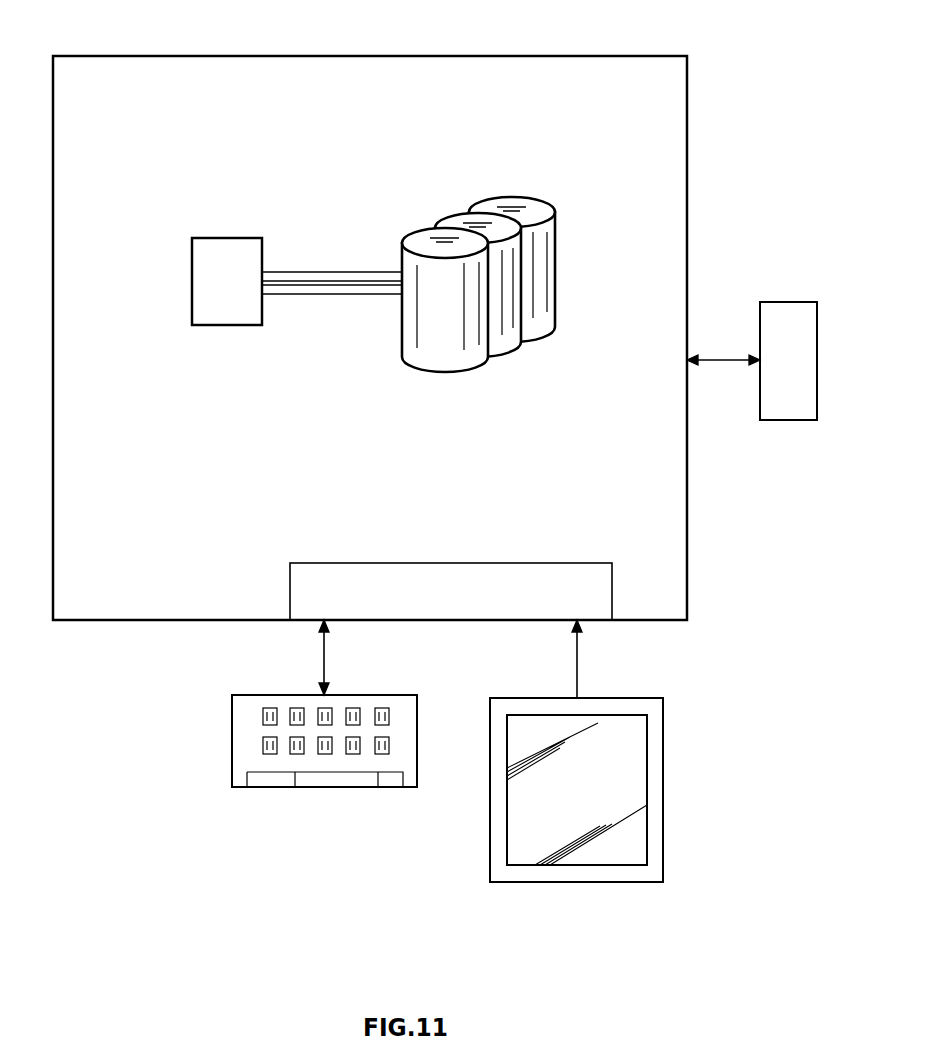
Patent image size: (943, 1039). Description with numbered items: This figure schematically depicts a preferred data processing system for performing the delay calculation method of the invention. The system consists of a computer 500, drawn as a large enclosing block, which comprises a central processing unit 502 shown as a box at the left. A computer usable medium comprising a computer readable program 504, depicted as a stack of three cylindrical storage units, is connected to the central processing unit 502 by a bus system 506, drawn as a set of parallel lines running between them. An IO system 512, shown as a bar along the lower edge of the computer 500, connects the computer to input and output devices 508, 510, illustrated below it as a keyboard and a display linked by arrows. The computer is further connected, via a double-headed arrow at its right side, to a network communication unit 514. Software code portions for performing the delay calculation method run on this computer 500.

The computer 500 is at (354, 56).
The central processing unit 502 is at (242, 238).
The computer readable program 504 is at (452, 213).
The bus system 506 is at (347, 272).
The input device 508 is at (318, 787).
The output device 510 is at (567, 882).
The input/output interface 512 is at (445, 563).
The network communication unit 514 is at (788, 302).